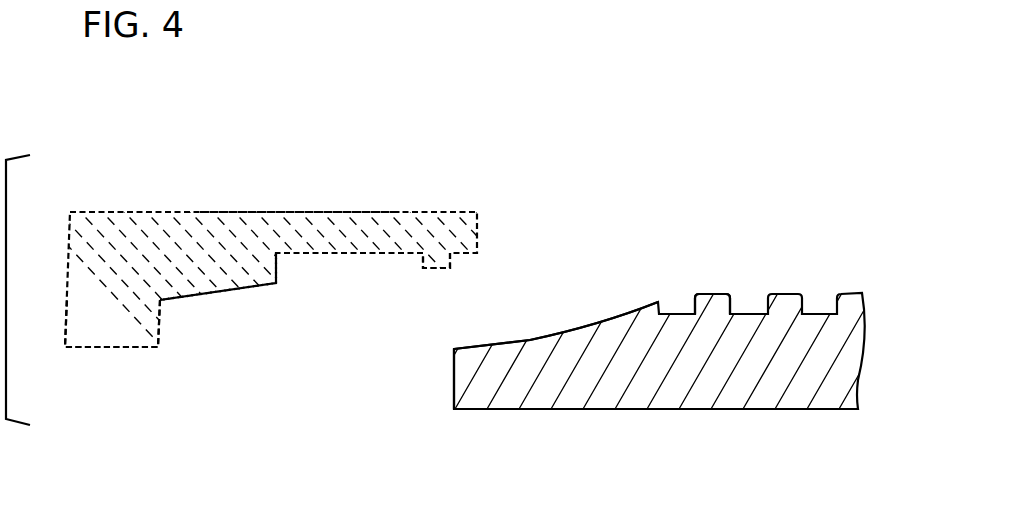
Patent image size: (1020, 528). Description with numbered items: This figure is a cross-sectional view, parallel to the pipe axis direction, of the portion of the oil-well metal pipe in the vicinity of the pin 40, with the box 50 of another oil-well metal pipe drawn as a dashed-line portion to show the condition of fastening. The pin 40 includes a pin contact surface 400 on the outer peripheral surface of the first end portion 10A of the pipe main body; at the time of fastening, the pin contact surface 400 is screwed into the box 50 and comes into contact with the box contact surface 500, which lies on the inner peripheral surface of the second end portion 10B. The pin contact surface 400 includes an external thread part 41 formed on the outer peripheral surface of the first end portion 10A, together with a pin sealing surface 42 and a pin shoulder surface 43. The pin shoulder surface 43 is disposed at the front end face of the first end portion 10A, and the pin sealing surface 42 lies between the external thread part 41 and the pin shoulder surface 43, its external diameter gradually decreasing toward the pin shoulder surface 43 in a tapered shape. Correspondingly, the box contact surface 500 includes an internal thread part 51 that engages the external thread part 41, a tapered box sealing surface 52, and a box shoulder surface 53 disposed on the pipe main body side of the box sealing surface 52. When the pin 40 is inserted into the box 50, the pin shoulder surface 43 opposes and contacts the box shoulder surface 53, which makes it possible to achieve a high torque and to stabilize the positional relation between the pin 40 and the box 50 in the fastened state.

The box 50 is at (238, 115).
The second end portion 10B is at (289, 190).
The box shoulder surface 53 is at (160, 325).
The box sealing surface 52 is at (263, 283).
The internal thread part 51 is at (437, 268).
The box contact surface 500 is at (270, 384).
The pin 40 is at (683, 116).
The pin contact surface 400 is at (607, 218).
The external thread part 41 is at (712, 293).
The pin sealing surface 42 is at (513, 338).
The pin shoulder surface 43 is at (454, 382).
The first end portion 10A is at (648, 432).